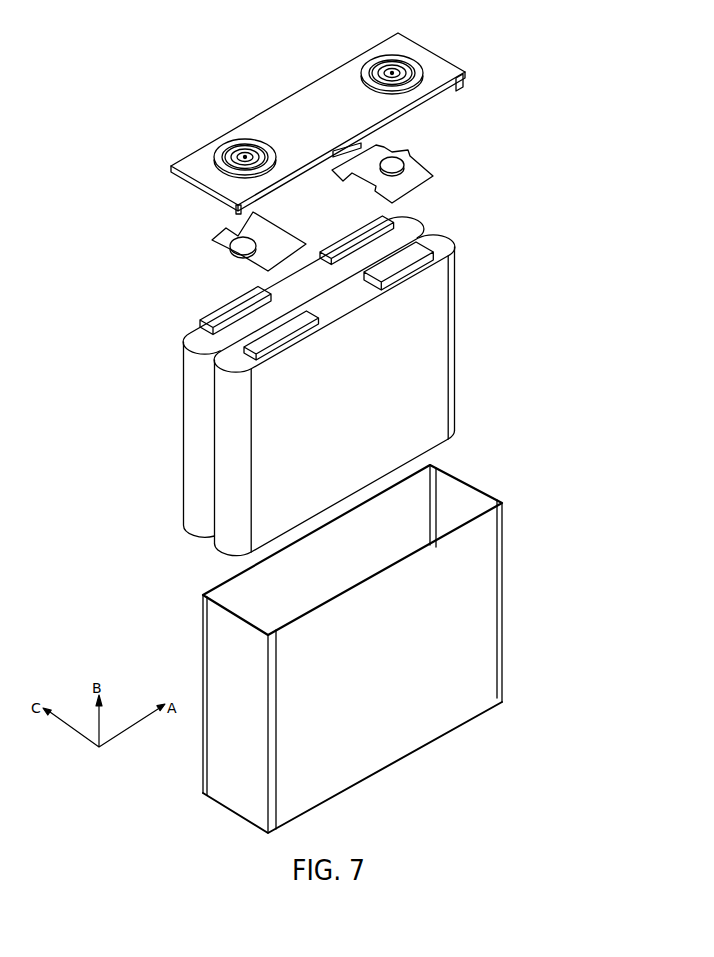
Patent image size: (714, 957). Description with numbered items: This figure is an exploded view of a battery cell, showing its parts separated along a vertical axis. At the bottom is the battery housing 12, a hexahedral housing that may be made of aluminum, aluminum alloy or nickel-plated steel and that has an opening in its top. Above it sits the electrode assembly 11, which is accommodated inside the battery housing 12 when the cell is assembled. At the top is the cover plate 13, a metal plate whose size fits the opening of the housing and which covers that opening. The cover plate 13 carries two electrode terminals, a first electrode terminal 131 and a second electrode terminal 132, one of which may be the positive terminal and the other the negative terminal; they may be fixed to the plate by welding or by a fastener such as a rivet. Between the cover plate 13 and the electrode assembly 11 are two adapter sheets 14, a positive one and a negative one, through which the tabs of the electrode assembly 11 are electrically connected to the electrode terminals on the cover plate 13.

The electrode assembly 11 is at (405, 224).
The battery housing 12 is at (487, 575).
The cover plate 13 is at (418, 60).
The first electrode terminal 131 is at (380, 60).
The second electrode terminal 132 is at (247, 148).
The adapter sheet 14 is at (412, 158).